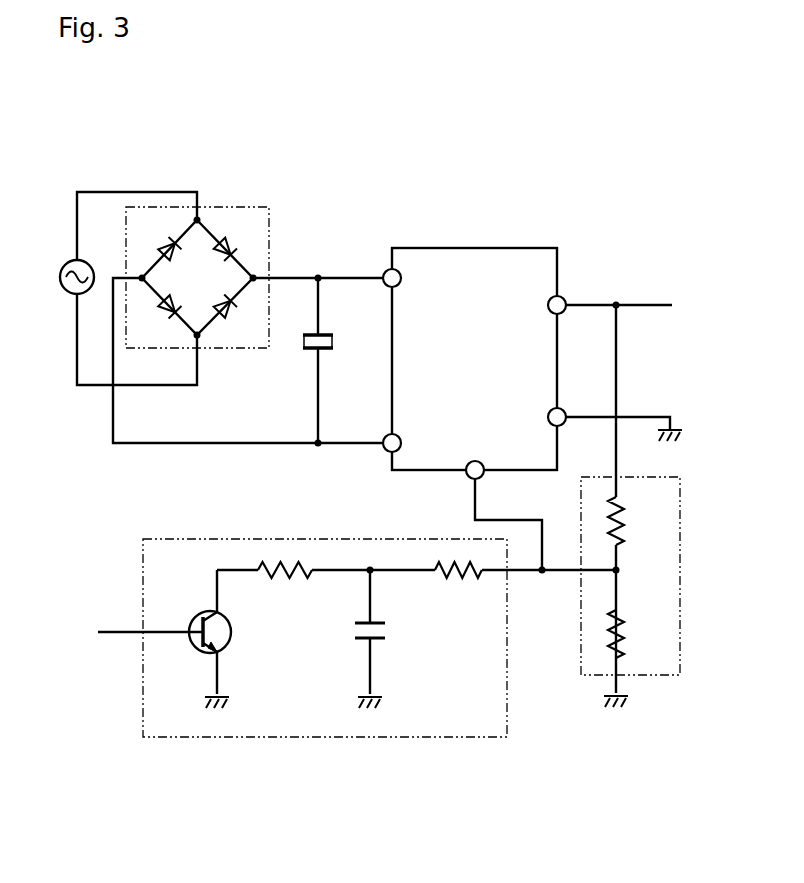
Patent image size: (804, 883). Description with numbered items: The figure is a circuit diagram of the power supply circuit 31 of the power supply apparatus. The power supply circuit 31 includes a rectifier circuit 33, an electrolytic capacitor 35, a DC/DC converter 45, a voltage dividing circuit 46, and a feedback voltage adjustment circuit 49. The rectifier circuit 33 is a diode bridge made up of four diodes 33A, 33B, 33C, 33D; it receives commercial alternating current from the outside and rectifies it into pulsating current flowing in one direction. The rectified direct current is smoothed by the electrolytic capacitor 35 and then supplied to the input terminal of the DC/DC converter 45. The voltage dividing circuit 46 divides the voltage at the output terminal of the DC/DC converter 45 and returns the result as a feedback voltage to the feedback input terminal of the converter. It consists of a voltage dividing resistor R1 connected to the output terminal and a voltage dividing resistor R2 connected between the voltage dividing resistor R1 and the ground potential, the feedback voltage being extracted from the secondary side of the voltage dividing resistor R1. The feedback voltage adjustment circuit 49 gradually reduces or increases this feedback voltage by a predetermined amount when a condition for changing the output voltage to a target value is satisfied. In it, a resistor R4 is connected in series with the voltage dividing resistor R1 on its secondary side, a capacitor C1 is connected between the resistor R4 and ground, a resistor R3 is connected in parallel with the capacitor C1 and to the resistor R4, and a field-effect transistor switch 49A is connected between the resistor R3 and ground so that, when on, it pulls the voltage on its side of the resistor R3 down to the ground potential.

The power supply circuit 31 is at (547, 189).
The rectifier circuit 33 is at (196, 277).
The diode 33A is at (155, 250).
The diode 33B is at (230, 243).
The diode 33C is at (158, 305).
The diode 33D is at (230, 318).
The electrolytic capacitor 35 is at (305, 348).
The DC/DC converter 45 is at (484, 248).
The voltage dividing circuit 46 is at (655, 576).
The feedback voltage adjustment circuit 49 is at (302, 610).
The FET switch 49A is at (200, 650).
The voltage dividing resistor R1 is at (637, 521).
The voltage dividing resistor R2 is at (638, 634).
The resistor R3 is at (285, 589).
The resistor R4 is at (458, 588).
The capacitor C1 is at (356, 639).